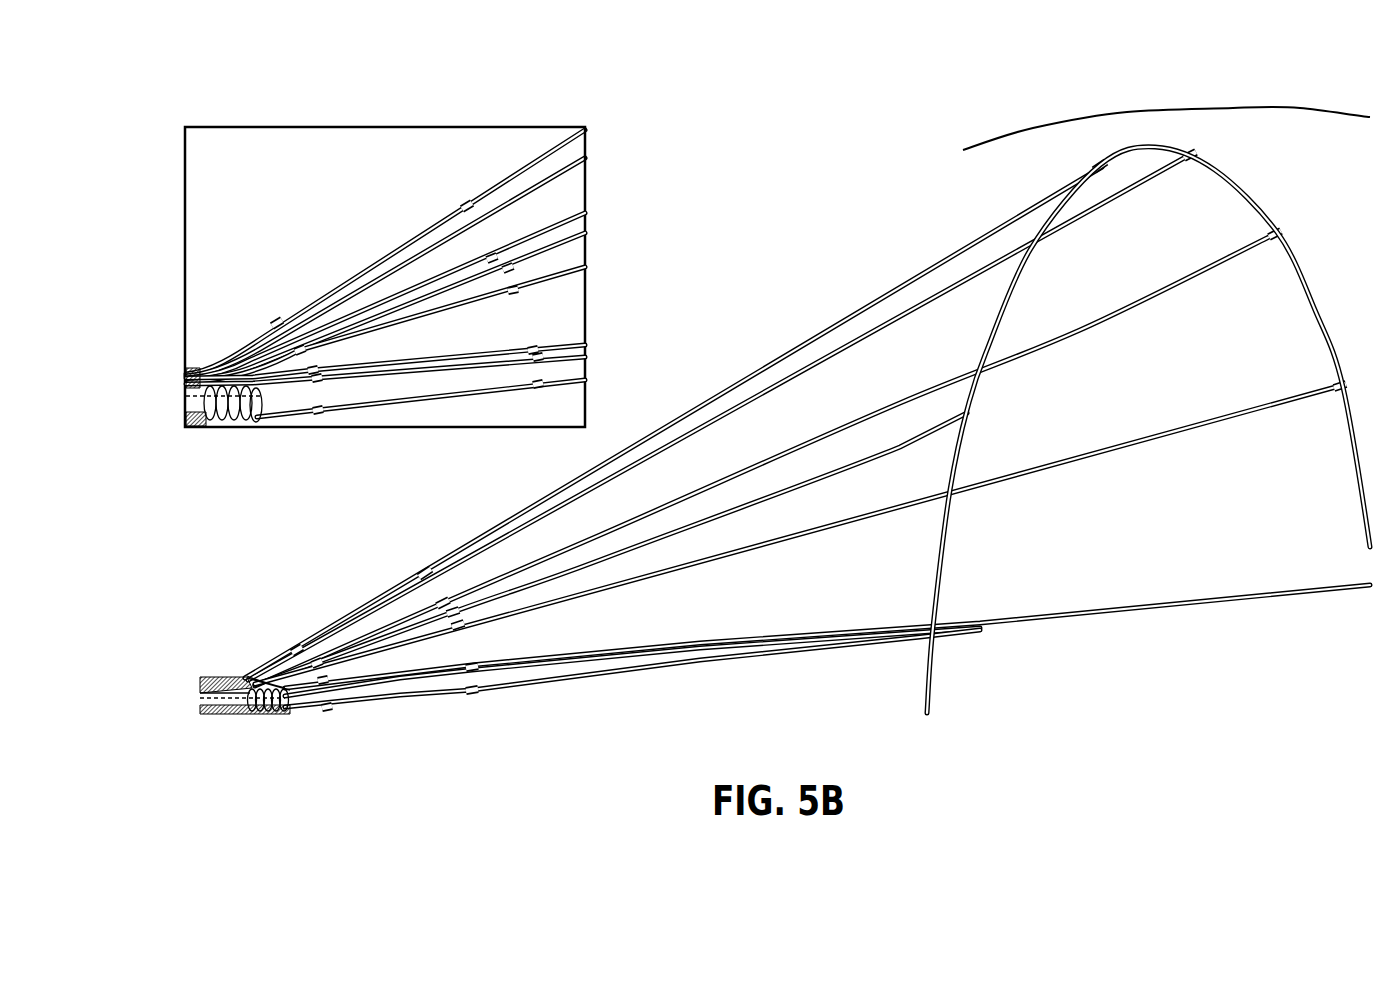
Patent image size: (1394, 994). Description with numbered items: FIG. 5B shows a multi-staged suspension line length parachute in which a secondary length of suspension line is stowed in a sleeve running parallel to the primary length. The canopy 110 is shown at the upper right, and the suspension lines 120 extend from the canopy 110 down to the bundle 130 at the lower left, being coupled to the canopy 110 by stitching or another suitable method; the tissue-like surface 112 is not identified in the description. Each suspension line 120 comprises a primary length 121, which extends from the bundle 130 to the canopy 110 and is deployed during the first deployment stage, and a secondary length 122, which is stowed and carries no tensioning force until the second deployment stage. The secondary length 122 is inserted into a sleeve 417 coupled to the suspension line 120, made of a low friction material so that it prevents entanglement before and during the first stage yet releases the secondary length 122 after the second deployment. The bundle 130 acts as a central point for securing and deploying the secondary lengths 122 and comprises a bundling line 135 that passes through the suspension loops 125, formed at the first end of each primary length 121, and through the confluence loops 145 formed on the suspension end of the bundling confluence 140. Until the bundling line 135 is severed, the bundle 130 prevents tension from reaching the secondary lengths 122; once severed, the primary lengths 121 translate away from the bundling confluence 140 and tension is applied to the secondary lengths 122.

The canopy 110 is at (1248, 130).
The target tissue surface 112 is at (1275, 220).
The suspension lines 120 is at (778, 419).
The primary length 121 is at (787, 353).
The secondary length 122 is at (425, 572).
The suspension loops 125 is at (280, 675).
The bundle 130 is at (237, 685).
The bundling line 135 is at (262, 675).
The bundling confluence 140 is at (207, 708).
The confluence loops 145 is at (270, 717).
The sleeve 417 is at (355, 607).